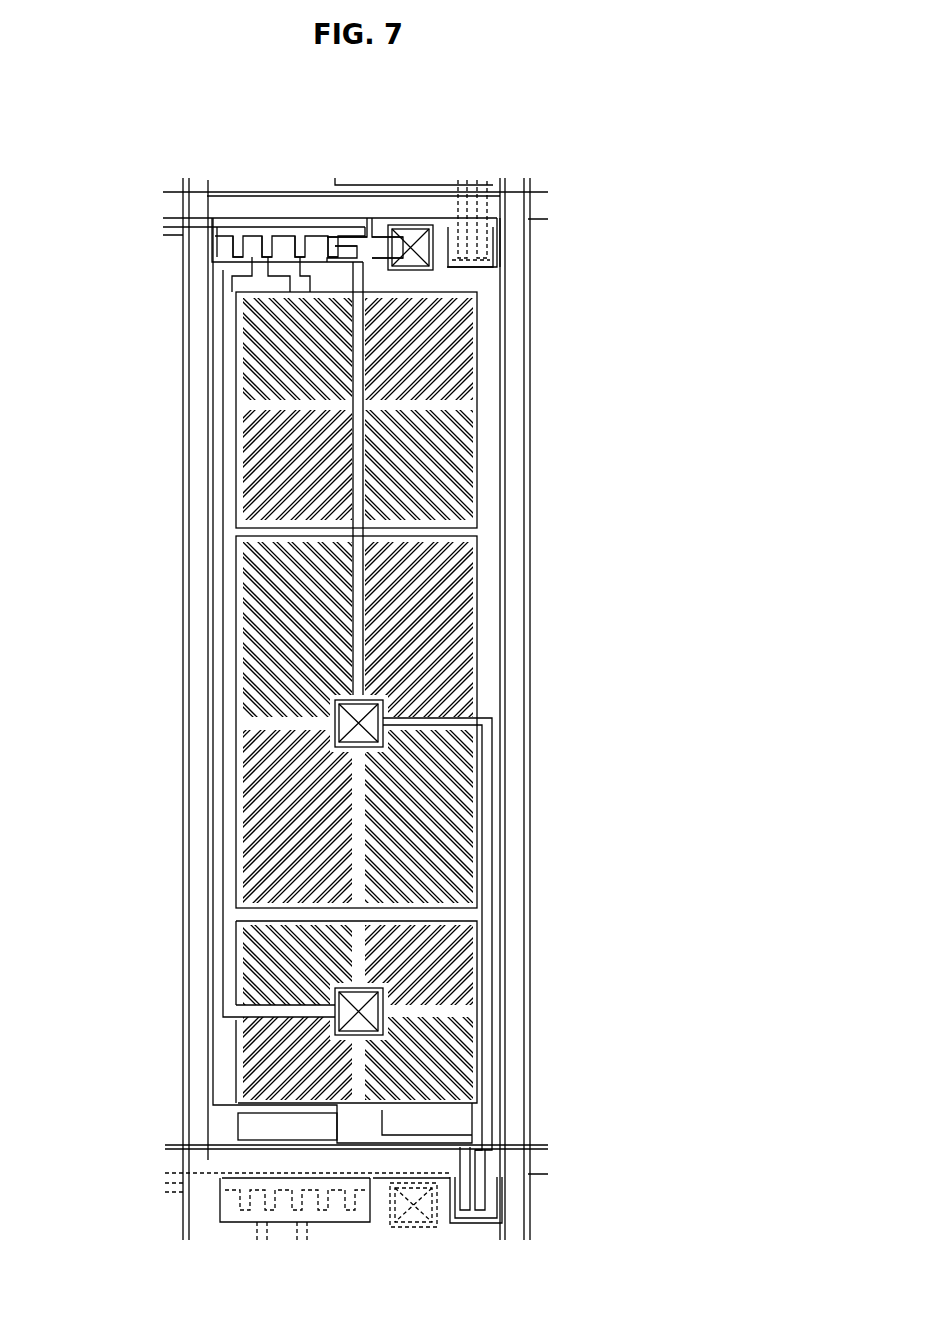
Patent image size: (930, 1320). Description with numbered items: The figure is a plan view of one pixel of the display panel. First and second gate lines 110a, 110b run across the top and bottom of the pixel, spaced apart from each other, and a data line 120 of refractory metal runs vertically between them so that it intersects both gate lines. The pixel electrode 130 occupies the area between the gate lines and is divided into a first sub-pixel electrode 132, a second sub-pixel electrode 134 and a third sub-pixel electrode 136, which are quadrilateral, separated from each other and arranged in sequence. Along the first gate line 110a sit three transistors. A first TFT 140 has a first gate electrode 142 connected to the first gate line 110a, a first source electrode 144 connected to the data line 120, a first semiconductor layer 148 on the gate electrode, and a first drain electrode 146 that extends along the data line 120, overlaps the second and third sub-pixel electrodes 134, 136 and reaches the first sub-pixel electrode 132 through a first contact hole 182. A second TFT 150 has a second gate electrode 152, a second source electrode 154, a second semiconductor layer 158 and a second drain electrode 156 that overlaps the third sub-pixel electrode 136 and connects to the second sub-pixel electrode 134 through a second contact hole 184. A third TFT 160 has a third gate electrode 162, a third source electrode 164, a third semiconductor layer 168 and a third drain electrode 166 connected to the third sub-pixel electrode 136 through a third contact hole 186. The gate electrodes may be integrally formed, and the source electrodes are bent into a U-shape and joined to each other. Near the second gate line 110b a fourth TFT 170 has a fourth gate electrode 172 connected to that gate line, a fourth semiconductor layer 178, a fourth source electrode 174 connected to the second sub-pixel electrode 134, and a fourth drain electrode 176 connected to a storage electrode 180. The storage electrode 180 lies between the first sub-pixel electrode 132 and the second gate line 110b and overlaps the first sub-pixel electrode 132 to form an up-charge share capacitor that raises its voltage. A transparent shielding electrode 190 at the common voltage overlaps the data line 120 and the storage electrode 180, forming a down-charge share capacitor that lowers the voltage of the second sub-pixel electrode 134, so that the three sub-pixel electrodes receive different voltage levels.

The first gate line 110a is at (540, 206).
The second gate line 110b is at (540, 1142).
The data line 120 is at (194, 400).
The pixel electrode 130 is at (465, 697).
The first sub-pixel electrode 132 is at (603, 455).
The second sub-pixel electrode 134 is at (478, 648).
The third sub-pixel electrode 136 is at (478, 455).
The first TFT 140 is at (271, 251).
The first gate electrode 142 is at (228, 281).
The first source electrode 144 is at (258, 250).
The first drain electrode 146 is at (240, 246).
The first semiconductor layer 148 is at (229, 225).
The second TFT 150 is at (255, 165).
The second gate electrode 152 is at (240, 242).
The second source electrode 154 is at (278, 247).
The second drain electrode 156 is at (300, 247).
The second semiconductor layer 158 is at (322, 262).
The third TFT 160 is at (417, 163).
The third gate electrode 162 is at (348, 250).
The third source electrode 164 is at (352, 250).
The third drain electrode 166 is at (382, 235).
The third semiconductor layer 168 is at (372, 240).
The fourth TFT 170 is at (564, 1213).
The fourth gate electrode 172 is at (462, 1225).
The fourth source electrode 174 is at (482, 1200).
The fourth drain electrode 176 is at (463, 1190).
The fourth semiconductor layer 178 is at (475, 1220).
The storage electrode 180 is at (258, 1127).
The first contact hole 182 is at (335, 1013).
The second contact hole 184 is at (335, 720).
The third contact hole 186 is at (413, 262).
The shielding electrode 190 is at (530, 375).